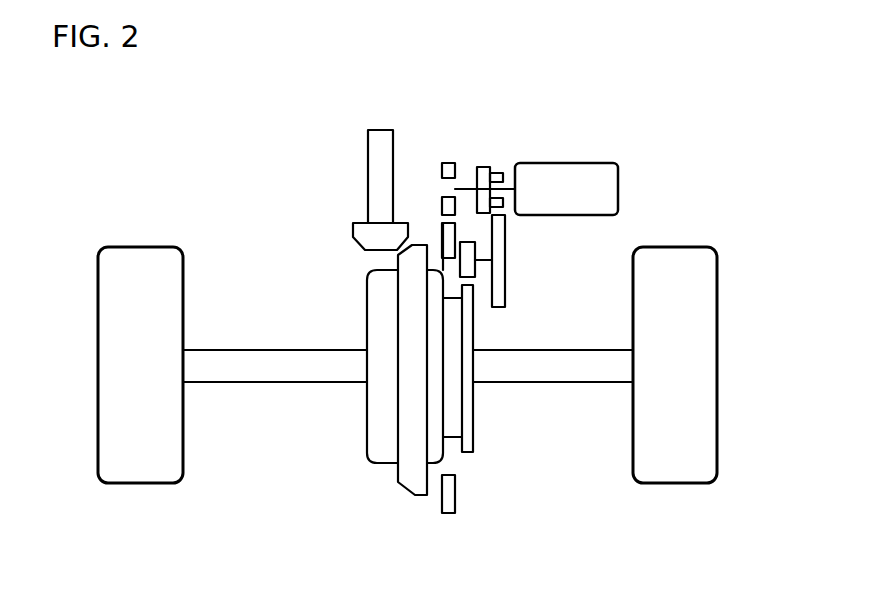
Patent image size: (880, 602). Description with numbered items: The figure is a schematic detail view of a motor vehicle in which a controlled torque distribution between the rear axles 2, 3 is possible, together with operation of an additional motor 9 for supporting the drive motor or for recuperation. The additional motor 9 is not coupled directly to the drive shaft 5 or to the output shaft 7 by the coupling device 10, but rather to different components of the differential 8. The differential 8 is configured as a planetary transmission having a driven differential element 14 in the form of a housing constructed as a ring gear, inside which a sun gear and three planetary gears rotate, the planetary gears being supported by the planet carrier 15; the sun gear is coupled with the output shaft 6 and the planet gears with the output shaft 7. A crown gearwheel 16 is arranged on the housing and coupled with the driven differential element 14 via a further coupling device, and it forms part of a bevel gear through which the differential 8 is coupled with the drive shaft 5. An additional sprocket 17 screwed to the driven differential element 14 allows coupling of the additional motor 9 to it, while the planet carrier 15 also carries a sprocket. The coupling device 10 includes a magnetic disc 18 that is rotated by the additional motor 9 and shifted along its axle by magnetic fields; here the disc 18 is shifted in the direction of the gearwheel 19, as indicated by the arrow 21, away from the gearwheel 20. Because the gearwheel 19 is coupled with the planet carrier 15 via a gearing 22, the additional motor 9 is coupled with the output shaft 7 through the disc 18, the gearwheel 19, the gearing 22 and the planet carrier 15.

The rear axle 2 is at (142, 247).
The rear axle 3 is at (683, 247).
The drive shaft 5 is at (367, 212).
The output shaft 6 is at (278, 350).
The output shaft 7 is at (555, 350).
The differential 8 is at (389, 400).
The additional motor 9 is at (620, 177).
The coupling device 10 is at (457, 169).
The driven differential element 14 is at (365, 437).
The planet carrier 15 is at (473, 413).
The crown gearwheel 16 is at (418, 497).
The additional sprocket 17 is at (455, 495).
The disc 18 is at (487, 167).
The gearwheel 19 is at (493, 172).
The gearwheel 20 is at (448, 162).
The arrow 21 is at (531, 132).
The gearing 22 is at (520, 258).